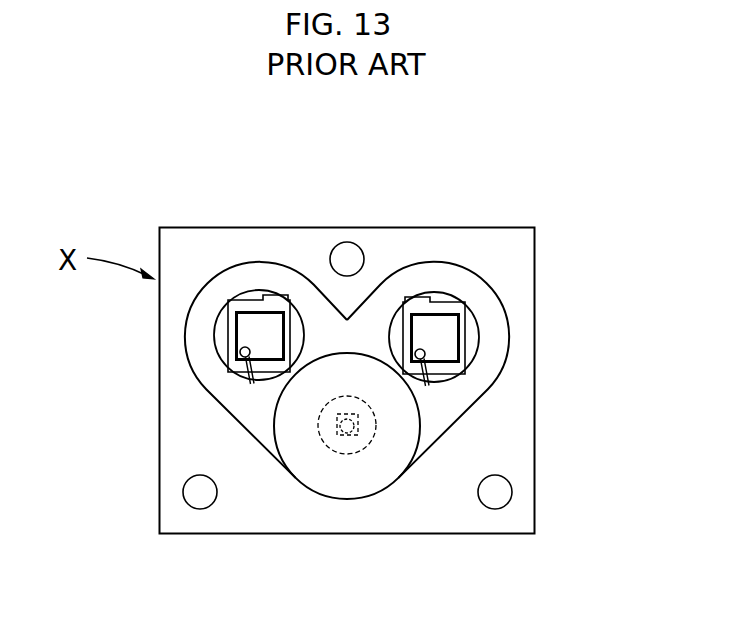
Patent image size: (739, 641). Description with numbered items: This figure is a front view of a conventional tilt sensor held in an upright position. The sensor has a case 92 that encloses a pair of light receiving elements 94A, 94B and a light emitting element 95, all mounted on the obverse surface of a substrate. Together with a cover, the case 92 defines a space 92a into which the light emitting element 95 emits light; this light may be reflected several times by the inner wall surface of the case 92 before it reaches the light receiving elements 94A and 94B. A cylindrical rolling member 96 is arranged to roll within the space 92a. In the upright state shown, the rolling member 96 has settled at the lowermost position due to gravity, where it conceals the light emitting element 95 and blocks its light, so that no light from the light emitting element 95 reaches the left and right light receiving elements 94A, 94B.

The case 92 is at (523, 310).
The space 92a is at (458, 398).
The light receiving element 94A is at (260, 322).
The light receiving element 94B is at (446, 322).
The light emitting element 95 is at (341, 436).
The cylindrical rolling member 96 is at (360, 480).